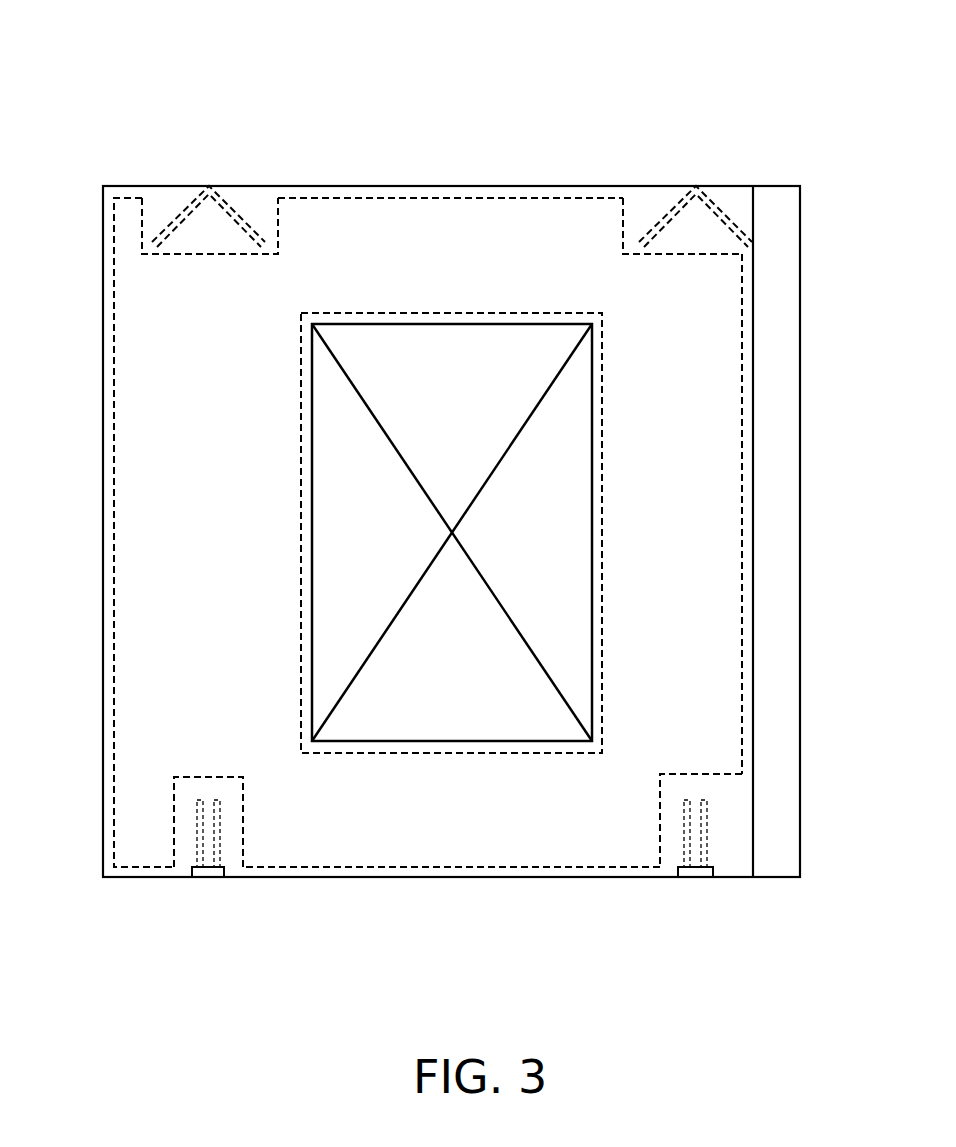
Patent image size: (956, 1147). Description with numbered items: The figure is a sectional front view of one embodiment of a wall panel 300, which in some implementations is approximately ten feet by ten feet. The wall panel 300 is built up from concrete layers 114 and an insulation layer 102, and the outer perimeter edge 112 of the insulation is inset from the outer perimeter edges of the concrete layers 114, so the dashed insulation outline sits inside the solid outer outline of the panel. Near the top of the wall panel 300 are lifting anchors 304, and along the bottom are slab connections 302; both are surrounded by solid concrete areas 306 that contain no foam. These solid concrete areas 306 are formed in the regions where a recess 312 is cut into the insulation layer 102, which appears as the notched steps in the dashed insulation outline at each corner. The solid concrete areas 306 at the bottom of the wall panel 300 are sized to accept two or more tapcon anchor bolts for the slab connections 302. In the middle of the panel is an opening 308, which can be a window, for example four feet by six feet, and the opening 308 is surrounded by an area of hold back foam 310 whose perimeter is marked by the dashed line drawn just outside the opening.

The wall panel 300 is at (184, 62).
The insulation layer 102 is at (452, 268).
The outer perimeter edge 112 is at (114, 312).
The concrete layers 114 is at (103, 357).
The slab connections 302 is at (205, 877).
The lifting anchors 304 is at (212, 186).
The solid concrete areas 306 is at (170, 200).
The openings 308 is at (467, 398).
The hold back foam 310 is at (602, 435).
The recess 312 is at (208, 258).